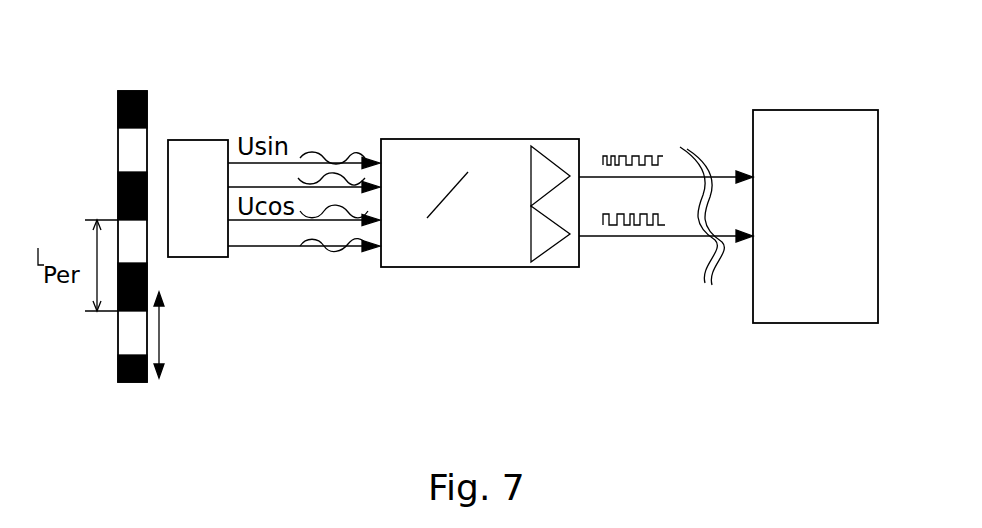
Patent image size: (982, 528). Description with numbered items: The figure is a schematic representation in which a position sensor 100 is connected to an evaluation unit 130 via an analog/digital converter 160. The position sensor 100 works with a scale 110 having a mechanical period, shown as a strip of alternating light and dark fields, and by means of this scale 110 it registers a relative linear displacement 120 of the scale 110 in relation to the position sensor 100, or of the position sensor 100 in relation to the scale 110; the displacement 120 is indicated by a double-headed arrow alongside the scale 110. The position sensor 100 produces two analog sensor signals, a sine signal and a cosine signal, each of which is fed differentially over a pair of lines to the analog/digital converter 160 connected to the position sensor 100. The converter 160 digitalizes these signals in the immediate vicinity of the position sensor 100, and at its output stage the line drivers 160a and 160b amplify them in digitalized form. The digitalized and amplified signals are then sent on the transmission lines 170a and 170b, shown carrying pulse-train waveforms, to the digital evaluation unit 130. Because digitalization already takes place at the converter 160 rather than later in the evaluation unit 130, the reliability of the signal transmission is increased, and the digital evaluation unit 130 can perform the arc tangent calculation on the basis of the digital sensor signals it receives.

The position sensor 100 is at (190, 140).
The scale 110 is at (147, 107).
The relative linear displacement 120 is at (159, 345).
The evaluation unit 130 is at (807, 110).
The analog/digital converter 160 is at (415, 267).
The line driver 160a is at (557, 160).
The line driver 160b is at (562, 243).
The transmission line 170a is at (678, 176).
The transmission line 170b is at (693, 237).